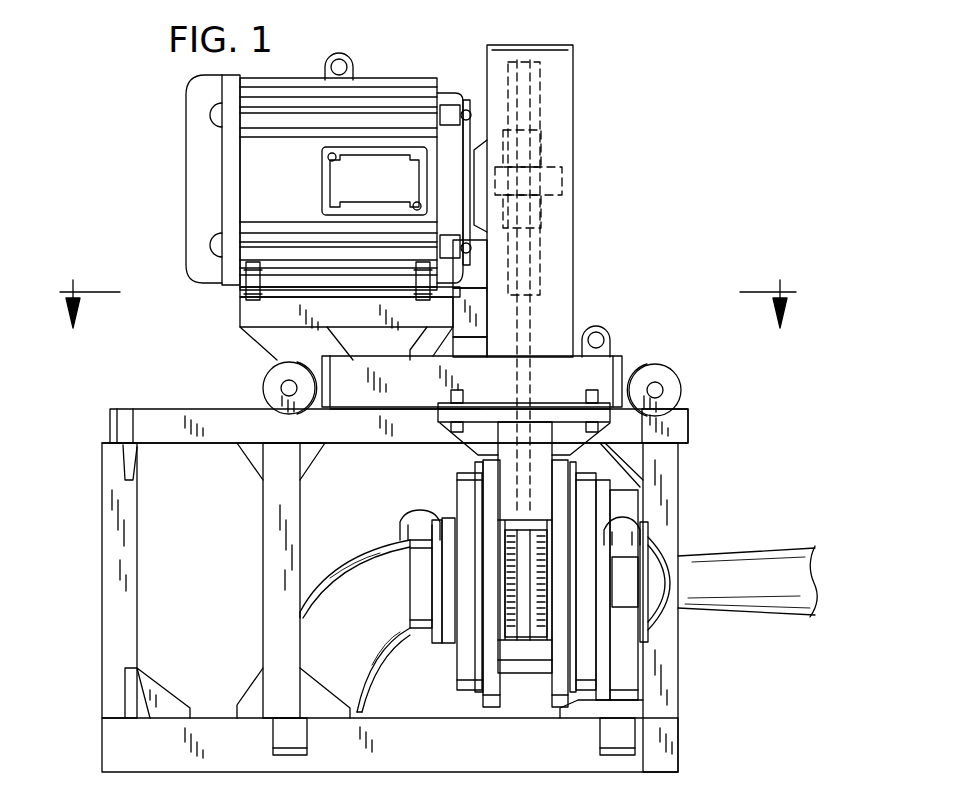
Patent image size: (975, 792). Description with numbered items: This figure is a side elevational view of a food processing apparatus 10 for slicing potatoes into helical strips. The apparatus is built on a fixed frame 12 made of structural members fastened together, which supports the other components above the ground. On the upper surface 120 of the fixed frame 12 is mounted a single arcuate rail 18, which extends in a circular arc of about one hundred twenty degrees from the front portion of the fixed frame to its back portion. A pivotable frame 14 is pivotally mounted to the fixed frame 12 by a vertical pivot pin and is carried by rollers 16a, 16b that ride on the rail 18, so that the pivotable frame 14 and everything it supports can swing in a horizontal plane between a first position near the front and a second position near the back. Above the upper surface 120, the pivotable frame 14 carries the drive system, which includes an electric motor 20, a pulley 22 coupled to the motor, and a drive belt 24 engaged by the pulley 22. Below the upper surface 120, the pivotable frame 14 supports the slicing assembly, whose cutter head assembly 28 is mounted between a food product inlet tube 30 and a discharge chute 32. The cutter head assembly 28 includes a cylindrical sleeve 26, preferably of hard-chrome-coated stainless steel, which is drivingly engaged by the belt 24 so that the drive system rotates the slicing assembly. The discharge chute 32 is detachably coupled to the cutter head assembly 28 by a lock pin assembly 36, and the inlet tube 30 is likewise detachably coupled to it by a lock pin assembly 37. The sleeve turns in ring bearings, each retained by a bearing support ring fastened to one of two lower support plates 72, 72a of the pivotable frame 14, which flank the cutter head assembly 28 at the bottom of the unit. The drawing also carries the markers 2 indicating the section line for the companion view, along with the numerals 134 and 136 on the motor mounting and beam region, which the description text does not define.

The food processing apparatus 10 is at (604, 83).
The fixed frame 12 is at (110, 545).
The pivotable frame 14 is at (272, 313).
The roller 16a is at (285, 375).
The roller 16b is at (667, 373).
The arcuate rail 18 is at (672, 429).
The electric motor 20 is at (378, 92).
The pulley 22 is at (548, 260).
The drive belt 24 is at (535, 318).
The cylindrical sleeve 26 is at (512, 610).
The cutter head assembly 28 is at (442, 483).
The food product inlet tube 30 is at (755, 562).
The discharge chute 32 is at (368, 552).
The lock pin assembly 36 is at (410, 517).
The lock pin assembly 37 is at (618, 532).
The lower support plate 72 is at (492, 707).
The lower support plate 72a is at (560, 707).
The upper surface 120 is at (163, 410).
The motor base plate 134 is at (303, 280).
The beam rail surface 136 is at (377, 411).
The section line 2- 2 is at (428, 296).